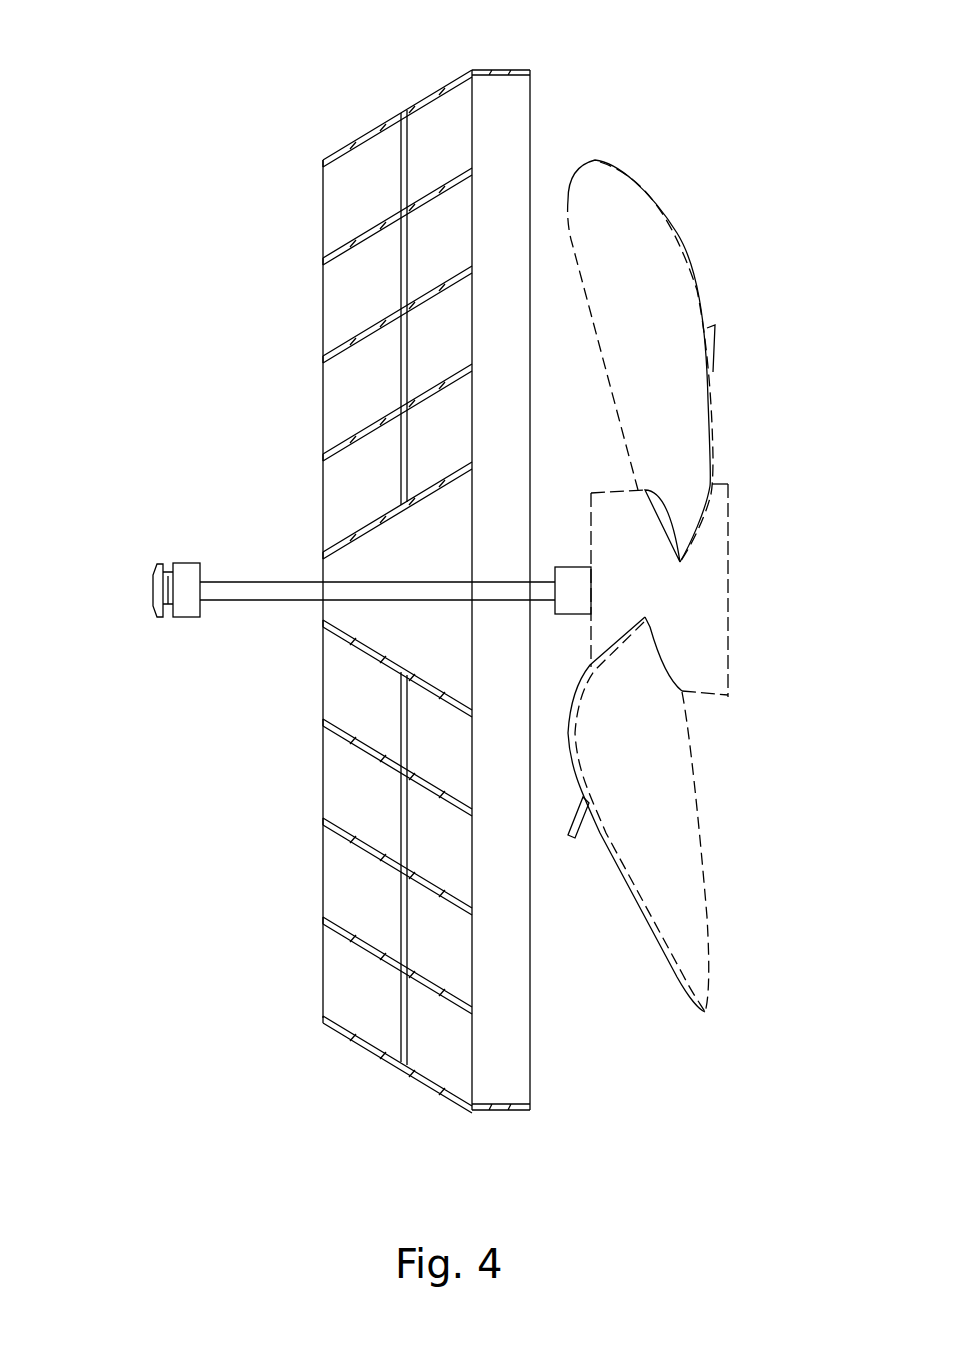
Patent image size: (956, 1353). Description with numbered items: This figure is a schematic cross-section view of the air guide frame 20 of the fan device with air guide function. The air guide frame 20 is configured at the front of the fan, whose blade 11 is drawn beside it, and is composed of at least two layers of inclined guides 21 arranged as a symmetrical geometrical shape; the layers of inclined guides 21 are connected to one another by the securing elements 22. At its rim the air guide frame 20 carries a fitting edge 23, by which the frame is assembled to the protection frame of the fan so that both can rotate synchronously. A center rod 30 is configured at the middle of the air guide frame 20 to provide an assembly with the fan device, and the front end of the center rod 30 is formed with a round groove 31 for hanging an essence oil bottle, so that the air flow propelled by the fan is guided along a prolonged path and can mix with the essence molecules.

The air guide frame 20 is at (252, 172).
The inclined guide 21 is at (392, 124).
The securing element 22 is at (403, 380).
The fitting edge 23 is at (501, 93).
The fan blade 11 is at (611, 185).
The center rod 30 is at (262, 592).
The round groove 31 is at (168, 604).